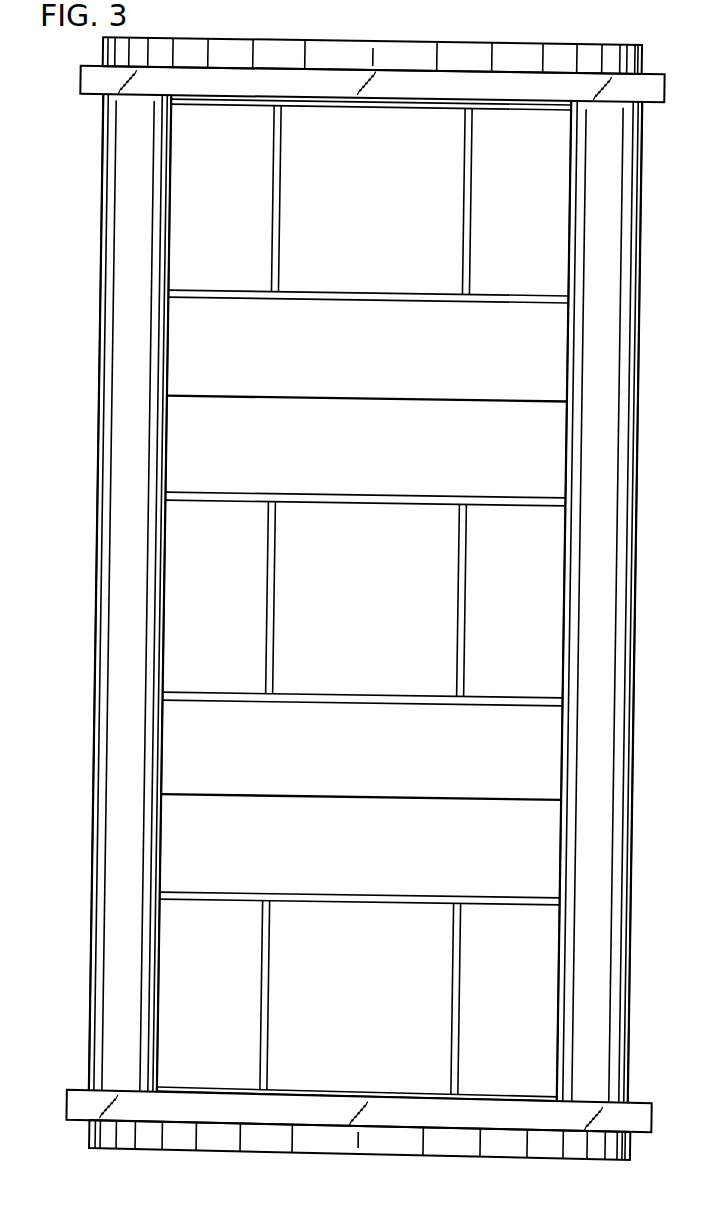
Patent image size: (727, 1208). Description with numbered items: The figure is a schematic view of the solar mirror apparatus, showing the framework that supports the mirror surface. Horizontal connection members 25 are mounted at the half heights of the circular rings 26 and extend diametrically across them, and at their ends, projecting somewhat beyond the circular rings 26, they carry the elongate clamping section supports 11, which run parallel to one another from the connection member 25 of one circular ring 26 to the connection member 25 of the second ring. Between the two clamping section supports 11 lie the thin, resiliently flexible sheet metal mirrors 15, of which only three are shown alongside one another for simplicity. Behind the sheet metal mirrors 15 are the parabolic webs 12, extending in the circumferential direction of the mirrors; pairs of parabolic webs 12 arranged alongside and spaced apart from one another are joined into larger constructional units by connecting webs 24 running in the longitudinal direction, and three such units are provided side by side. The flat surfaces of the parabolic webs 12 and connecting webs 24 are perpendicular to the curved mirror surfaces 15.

The clamping section support 11 is at (117, 526).
The parabolic web 12 is at (386, 100).
The sheet metal mirror 15 is at (551, 437).
The connecting web 24 is at (274, 208).
The connection member 25 is at (509, 81).
The circular ring 26 is at (310, 56).